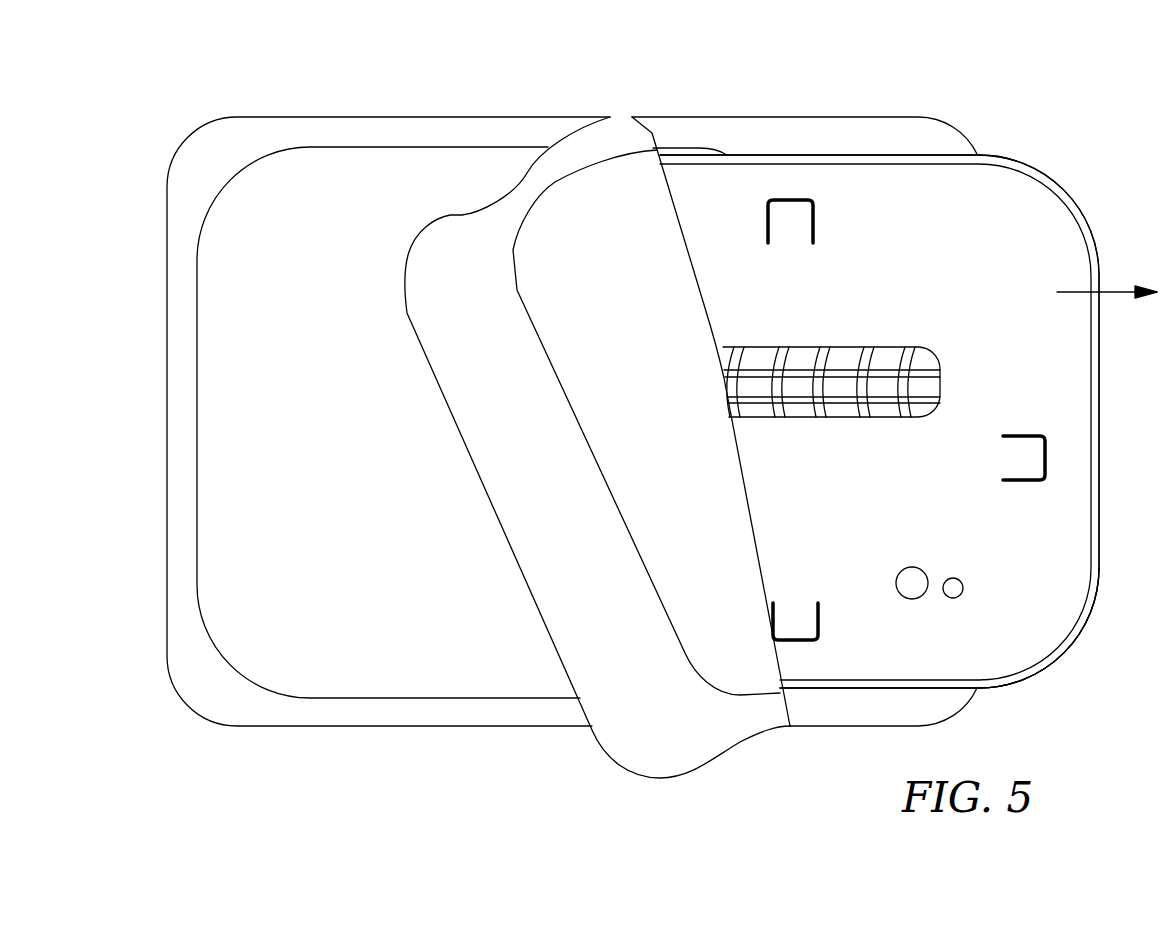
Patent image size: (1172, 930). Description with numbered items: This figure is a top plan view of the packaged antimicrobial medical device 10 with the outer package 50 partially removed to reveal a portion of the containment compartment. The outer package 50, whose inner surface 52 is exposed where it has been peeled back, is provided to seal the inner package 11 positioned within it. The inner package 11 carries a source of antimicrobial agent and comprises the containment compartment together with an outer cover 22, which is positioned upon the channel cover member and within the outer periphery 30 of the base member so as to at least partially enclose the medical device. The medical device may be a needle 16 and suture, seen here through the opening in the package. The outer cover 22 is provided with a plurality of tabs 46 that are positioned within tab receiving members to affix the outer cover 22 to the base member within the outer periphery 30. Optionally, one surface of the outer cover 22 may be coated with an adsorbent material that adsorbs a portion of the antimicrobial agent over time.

The packaged antimicrobial medical device 10 is at (583, 88).
The outer package 50 is at (512, 730).
The inner surface 52 is at (603, 330).
The outer cover 22 is at (966, 267).
The outer periphery 30 is at (1057, 186).
The inner package 11 is at (1048, 670).
The needle 16 is at (734, 358).
The tabs 46 is at (808, 218).